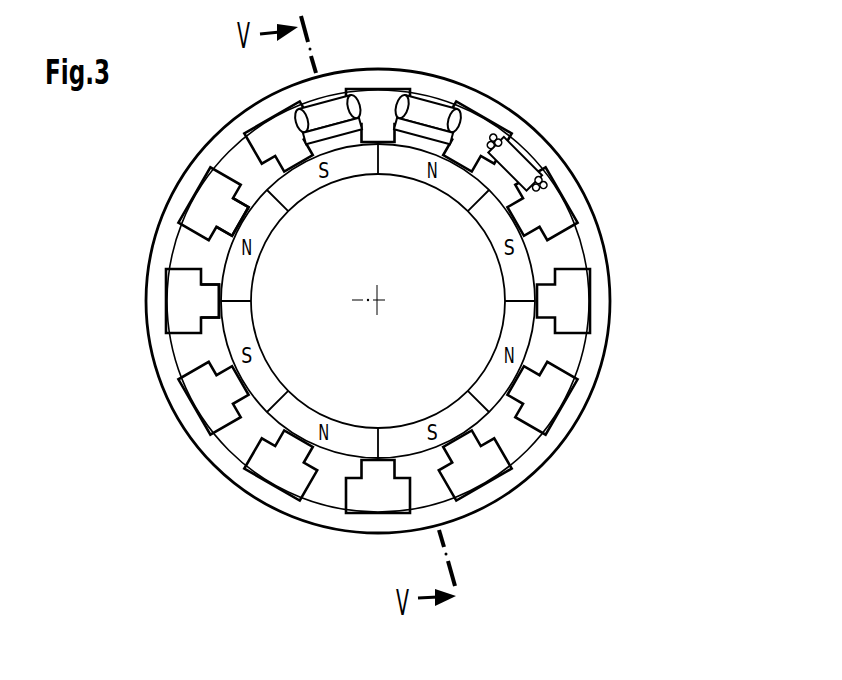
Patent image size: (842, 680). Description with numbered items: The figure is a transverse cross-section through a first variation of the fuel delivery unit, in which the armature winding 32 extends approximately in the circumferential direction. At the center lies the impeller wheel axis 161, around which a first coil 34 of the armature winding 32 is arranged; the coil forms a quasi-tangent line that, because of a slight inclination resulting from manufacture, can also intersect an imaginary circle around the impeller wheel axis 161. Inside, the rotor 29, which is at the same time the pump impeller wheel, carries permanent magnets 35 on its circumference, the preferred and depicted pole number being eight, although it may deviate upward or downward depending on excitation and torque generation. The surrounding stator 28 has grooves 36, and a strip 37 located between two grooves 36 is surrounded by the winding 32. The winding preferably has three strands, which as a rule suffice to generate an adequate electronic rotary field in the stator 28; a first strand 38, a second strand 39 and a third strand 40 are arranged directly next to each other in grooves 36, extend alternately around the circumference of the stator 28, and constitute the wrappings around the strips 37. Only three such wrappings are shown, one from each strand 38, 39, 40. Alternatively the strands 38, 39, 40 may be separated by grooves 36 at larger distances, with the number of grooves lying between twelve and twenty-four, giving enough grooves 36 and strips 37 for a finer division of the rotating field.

The stator 28 is at (313, 513).
The rotor 29 is at (247, 412).
The armature winding 32 is at (433, 103).
The first coil 34 is at (493, 140).
The permanent magnets 35 is at (232, 322).
The grooves 36 is at (470, 127).
The strip 37 is at (530, 157).
The first strand 38 is at (347, 93).
The second strand 39 is at (406, 93).
The third strand 40 is at (512, 150).
The impeller wheel axis 161 is at (383, 298).